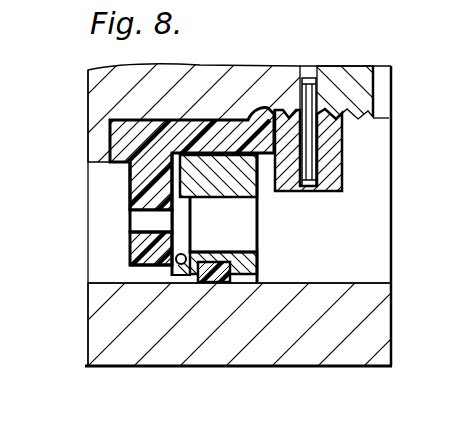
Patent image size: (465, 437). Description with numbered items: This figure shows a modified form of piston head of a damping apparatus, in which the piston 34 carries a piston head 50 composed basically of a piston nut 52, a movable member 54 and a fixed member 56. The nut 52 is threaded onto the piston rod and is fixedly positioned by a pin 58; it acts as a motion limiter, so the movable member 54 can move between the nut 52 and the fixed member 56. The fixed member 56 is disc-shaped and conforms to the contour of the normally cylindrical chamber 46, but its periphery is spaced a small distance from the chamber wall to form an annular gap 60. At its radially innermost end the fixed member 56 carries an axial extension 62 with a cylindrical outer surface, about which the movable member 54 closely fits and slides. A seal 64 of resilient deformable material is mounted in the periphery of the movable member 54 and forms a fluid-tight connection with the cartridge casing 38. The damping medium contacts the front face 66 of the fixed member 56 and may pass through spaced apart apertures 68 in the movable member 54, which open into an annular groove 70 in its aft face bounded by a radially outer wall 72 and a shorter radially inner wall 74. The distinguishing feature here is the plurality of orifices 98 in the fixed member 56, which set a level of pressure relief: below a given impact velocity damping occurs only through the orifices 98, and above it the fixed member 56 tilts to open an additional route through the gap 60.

The piston 34 is at (97, 80).
The cartridge casing 38 is at (379, 325).
The chamber 46 is at (326, 281).
The piston head 50 is at (358, 146).
The piston nut 52 is at (338, 178).
The movable member 54 is at (252, 260).
The fixed member 56 is at (137, 253).
The pin 58 is at (309, 97).
The annular gap 60 is at (145, 276).
The axial extension 62 is at (226, 132).
The seal 64 is at (214, 283).
The front face 66 is at (145, 197).
The apertures 68 is at (245, 215).
The annular groove 70 is at (181, 262).
The radially outer wall 72 is at (118, 286).
The radially inner wall 74 is at (207, 190).
The orifices 98 is at (140, 225).